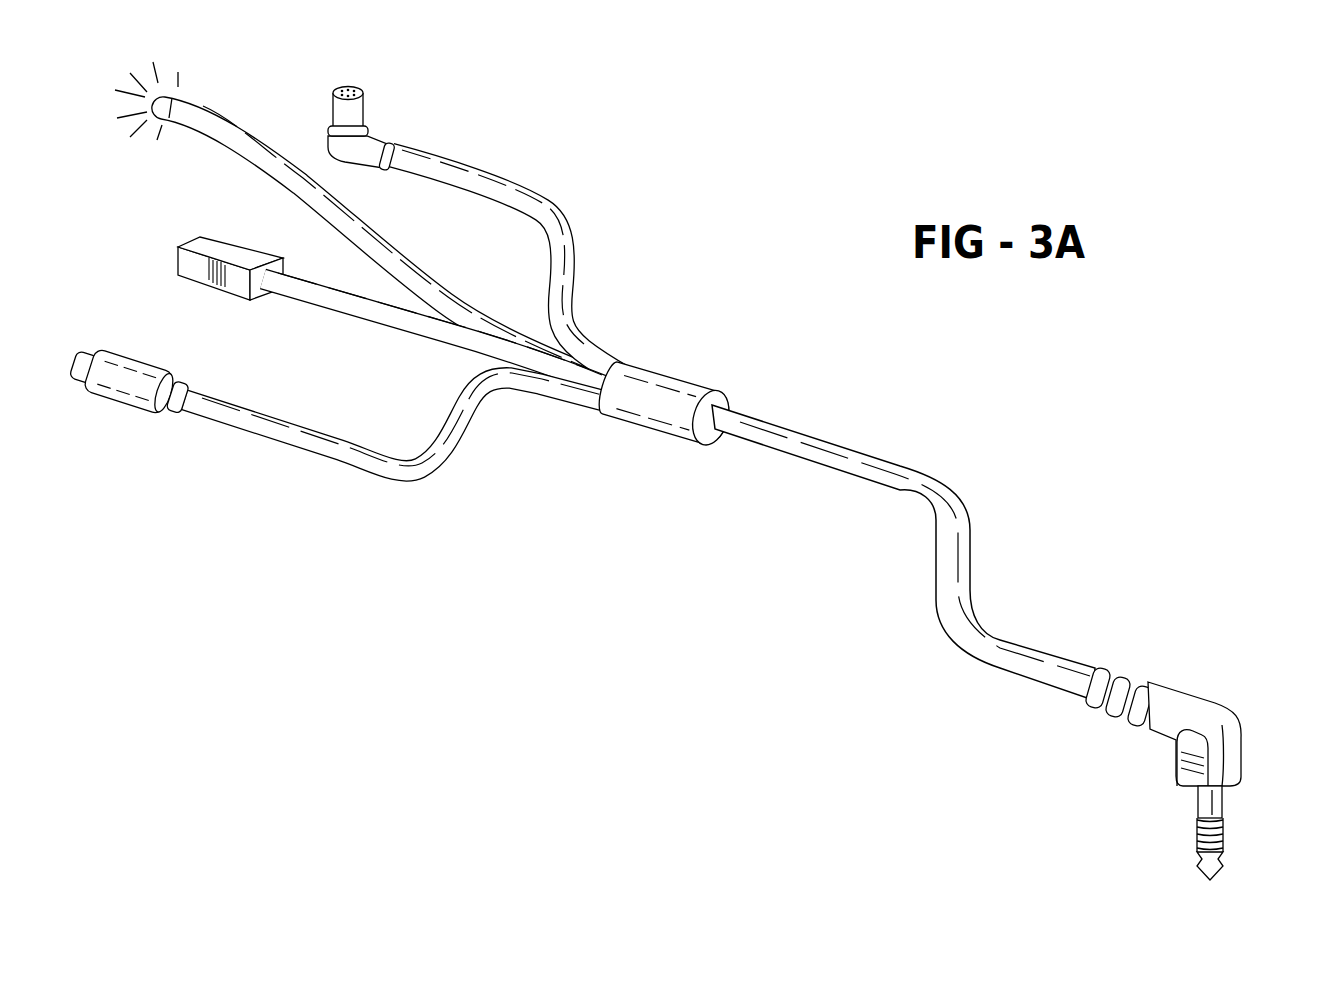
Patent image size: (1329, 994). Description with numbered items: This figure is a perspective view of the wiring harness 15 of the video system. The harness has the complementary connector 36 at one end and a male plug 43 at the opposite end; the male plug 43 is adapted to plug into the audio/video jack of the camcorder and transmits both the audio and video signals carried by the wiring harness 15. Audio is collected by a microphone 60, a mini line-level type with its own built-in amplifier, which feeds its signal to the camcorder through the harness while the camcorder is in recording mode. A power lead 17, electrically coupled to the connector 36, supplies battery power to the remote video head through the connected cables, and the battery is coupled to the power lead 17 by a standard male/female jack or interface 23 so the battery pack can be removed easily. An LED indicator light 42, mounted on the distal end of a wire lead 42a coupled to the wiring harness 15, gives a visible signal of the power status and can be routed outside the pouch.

The wiring harness 15 is at (592, 177).
The power lead 17 is at (338, 448).
The male/female jack or interface 23 is at (125, 378).
The complementary connector 36 is at (217, 250).
The LED indicator light 42 is at (165, 102).
The wire lead 42a is at (222, 128).
The male plug 43 is at (1232, 742).
The microphone 60 is at (367, 116).